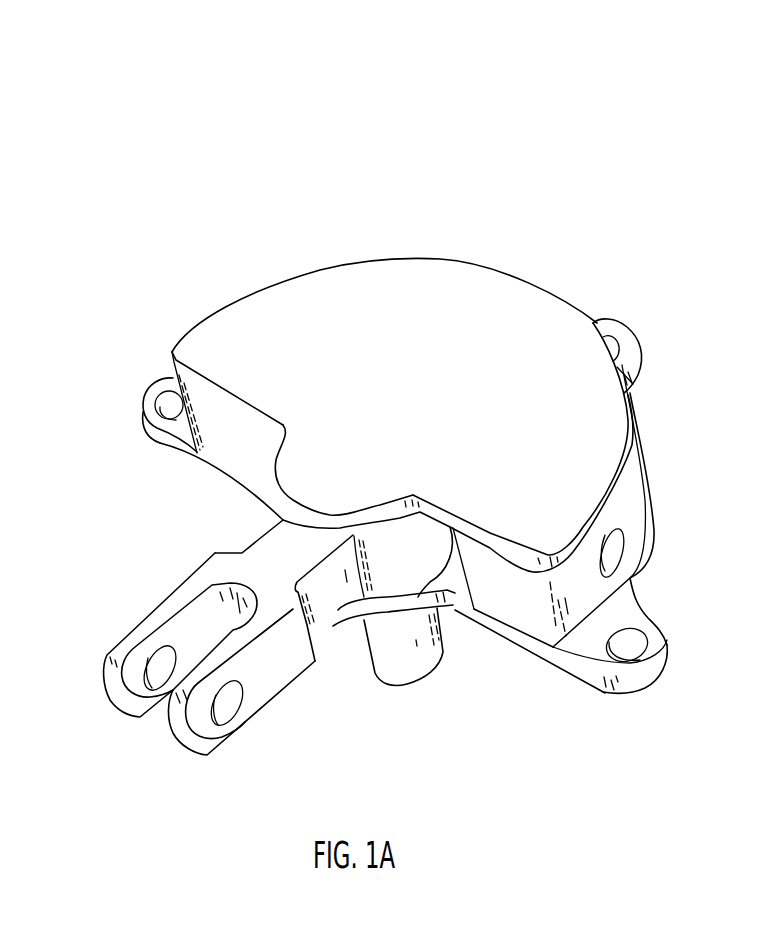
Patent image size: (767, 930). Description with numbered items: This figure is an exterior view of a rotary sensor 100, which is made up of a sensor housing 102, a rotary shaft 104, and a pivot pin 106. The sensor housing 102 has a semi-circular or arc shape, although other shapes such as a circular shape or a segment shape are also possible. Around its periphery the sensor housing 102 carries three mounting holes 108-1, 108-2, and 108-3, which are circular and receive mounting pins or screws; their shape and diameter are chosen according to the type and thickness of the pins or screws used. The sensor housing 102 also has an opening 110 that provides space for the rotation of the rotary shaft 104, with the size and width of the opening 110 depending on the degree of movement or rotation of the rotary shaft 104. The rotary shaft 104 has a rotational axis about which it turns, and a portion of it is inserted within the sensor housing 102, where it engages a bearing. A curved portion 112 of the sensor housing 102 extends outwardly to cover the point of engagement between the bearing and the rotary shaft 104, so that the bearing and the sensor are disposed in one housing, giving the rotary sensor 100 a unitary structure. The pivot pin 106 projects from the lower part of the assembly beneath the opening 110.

The rotary sensor 100 is at (181, 149).
The sensor housing 102 is at (284, 278).
The rotary shaft 104 is at (200, 566).
The pivot pin 106 is at (374, 675).
The mounting hole 108-1 is at (657, 623).
The mounting hole 108-2 is at (620, 323).
The mounting hole 108-3 is at (149, 390).
The opening 110 is at (449, 577).
The curved portion 112 is at (333, 480).